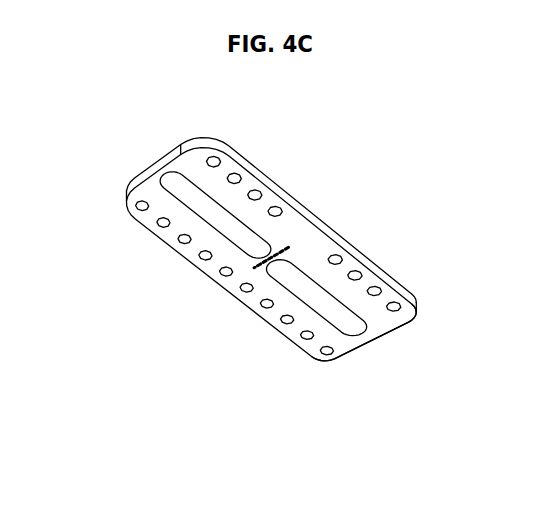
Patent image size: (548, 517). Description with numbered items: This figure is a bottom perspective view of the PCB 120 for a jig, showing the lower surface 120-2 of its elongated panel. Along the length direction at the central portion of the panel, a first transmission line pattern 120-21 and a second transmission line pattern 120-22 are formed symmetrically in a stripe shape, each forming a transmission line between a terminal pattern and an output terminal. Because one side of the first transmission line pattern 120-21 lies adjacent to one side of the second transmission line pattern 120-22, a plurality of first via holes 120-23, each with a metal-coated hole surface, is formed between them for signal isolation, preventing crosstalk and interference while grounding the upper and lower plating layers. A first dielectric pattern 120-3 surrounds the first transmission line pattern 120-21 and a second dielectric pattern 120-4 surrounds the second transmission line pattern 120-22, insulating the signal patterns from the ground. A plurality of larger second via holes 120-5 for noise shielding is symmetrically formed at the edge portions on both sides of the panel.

The PCB for a jig 120 is at (144, 133).
The lower surface 120-2 is at (310, 232).
The first dielectric pattern 120-3 is at (404, 330).
The second dielectric pattern 120-4 is at (277, 205).
The second via holes 120-5 is at (379, 288).
The first transmission line pattern 120-21 is at (330, 315).
The second transmission line pattern 120-22 is at (188, 191).
The first via holes 120-23 is at (250, 268).